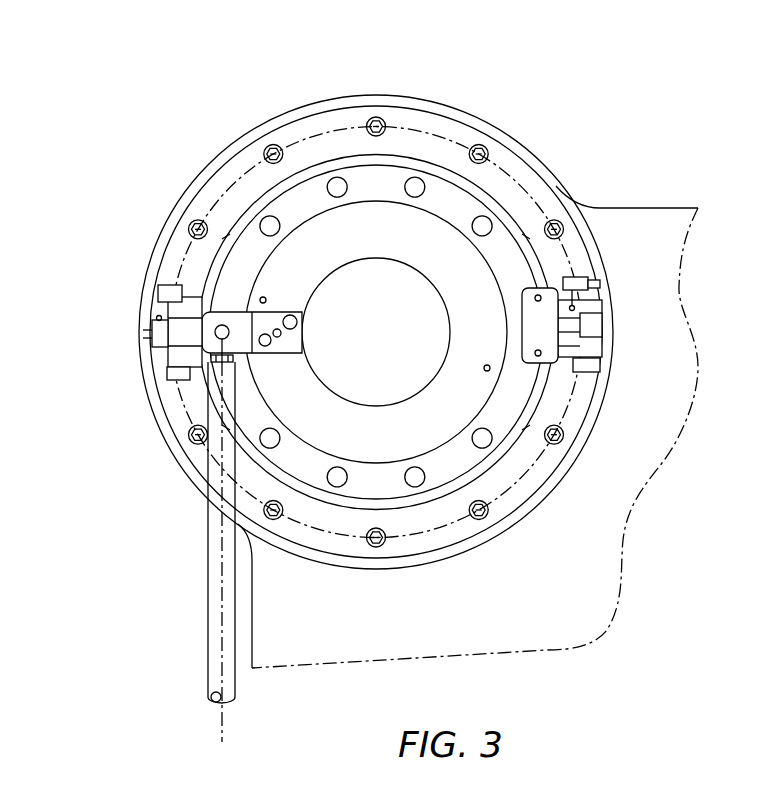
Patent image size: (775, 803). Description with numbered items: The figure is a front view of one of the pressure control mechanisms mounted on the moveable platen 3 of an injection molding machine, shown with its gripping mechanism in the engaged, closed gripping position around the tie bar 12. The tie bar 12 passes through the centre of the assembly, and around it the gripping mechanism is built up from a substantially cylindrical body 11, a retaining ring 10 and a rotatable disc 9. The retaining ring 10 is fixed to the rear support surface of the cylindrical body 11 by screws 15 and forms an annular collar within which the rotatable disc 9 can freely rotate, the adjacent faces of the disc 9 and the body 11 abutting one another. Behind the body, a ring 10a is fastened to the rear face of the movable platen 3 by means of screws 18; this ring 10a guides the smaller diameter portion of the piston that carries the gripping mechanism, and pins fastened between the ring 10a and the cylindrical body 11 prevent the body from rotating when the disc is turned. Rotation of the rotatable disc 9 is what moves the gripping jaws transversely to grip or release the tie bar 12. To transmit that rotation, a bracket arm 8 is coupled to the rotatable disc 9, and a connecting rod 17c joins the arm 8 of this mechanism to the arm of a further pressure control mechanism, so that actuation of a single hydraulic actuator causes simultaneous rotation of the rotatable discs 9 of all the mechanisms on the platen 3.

The moveable platen 3 is at (640, 272).
The arm 8 is at (237, 320).
The rotatable disc 9 is at (490, 376).
The retaining ring 10 is at (458, 203).
The ring 10a is at (342, 130).
The cylindrical body 11 is at (257, 198).
The tie bar 12 is at (402, 313).
The screws 15 is at (414, 184).
The third connecting rod 17c is at (220, 577).
The screws 18 is at (270, 150).